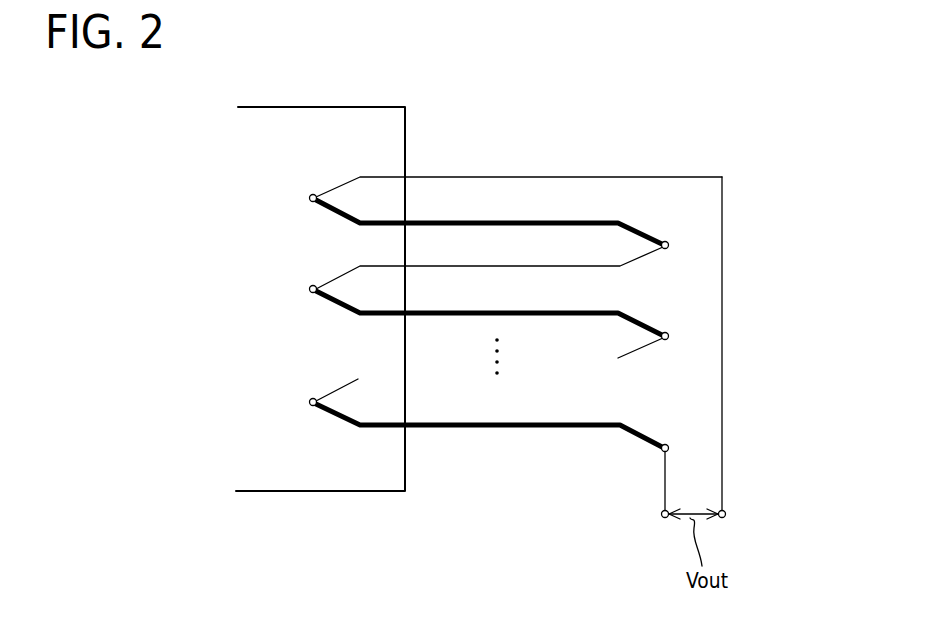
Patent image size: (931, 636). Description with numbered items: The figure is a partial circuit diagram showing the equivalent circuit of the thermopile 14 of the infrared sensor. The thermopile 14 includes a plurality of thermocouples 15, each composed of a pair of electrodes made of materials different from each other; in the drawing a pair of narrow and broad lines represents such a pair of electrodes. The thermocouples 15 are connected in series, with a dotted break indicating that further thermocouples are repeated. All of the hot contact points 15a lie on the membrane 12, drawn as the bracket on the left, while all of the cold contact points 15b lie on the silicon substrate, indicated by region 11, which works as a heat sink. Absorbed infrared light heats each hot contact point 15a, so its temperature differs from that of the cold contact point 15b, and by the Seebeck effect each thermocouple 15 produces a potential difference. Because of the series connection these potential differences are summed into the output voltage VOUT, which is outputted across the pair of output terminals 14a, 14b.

The substrate 11 is at (634, 113).
The membrane 12 is at (344, 116).
The thermopile 14 is at (725, 226).
The output terminal 14a is at (663, 518).
The output terminal 14b is at (723, 518).
The thermocouple 15 is at (507, 186).
The hot contact point 15a is at (309, 198).
The cold contact point 15b is at (668, 242).